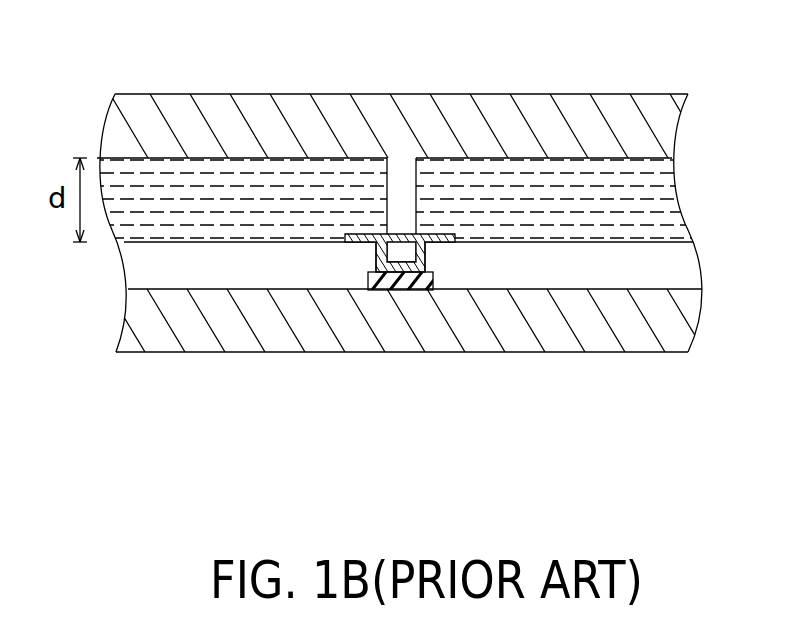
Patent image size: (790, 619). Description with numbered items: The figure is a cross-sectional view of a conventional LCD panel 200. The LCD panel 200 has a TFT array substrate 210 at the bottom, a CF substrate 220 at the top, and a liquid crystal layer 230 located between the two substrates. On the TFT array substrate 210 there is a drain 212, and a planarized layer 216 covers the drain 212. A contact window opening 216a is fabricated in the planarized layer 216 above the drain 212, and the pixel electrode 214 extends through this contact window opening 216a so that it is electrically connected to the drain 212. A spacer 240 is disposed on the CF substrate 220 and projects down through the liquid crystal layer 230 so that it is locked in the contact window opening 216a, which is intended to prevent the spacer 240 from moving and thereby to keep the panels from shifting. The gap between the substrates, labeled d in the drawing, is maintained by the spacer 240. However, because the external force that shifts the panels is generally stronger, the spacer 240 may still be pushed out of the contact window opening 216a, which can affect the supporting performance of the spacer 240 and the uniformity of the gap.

The LCD panel 200 is at (738, 518).
The TFT array substrate 210 is at (726, 240).
The drain 212 is at (388, 290).
The pixel electrode 214 is at (447, 237).
The planarized layer 216 is at (140, 271).
The contact window opening 216a is at (400, 249).
The CF substrate 220 is at (655, 129).
The liquid crystal layer 230 is at (655, 198).
The spacer 240 is at (413, 178).